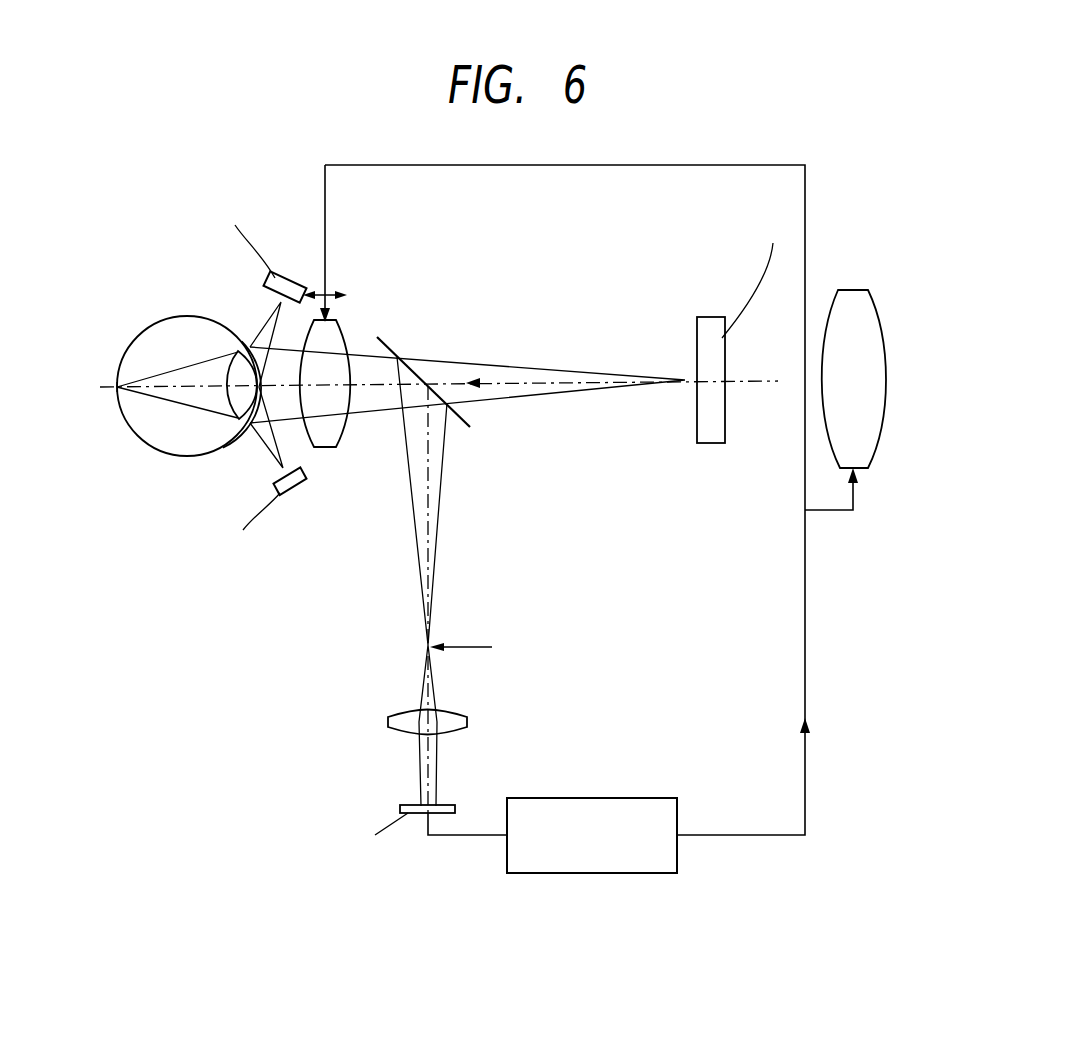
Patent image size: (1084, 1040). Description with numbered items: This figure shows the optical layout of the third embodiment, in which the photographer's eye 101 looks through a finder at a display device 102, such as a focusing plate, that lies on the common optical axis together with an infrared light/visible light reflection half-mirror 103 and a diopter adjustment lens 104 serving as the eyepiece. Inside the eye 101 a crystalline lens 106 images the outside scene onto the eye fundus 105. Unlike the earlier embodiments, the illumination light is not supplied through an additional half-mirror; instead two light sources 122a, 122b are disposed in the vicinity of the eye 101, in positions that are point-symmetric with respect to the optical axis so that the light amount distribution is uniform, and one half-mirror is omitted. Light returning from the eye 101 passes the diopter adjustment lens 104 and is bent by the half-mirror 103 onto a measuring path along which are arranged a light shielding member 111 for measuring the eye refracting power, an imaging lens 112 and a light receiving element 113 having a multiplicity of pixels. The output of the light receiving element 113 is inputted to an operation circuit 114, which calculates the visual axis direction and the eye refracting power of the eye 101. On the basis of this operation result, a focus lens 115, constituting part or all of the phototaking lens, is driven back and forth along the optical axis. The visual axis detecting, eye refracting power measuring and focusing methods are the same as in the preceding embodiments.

The eye 101 is at (193, 327).
The display device 102 is at (705, 330).
The infrared light/visible light reflection half-mirror 103 is at (385, 341).
The diopter adjustment lens 104 is at (347, 338).
The eye fundus 105 is at (117, 390).
The crystalline lens 106 is at (222, 425).
The light shielding member 111 is at (463, 647).
The imaging lens 112 is at (448, 722).
The light receiving element 113 is at (450, 805).
The operation circuit 114 is at (597, 798).
The focus lens 115 is at (870, 428).
The light source 122a is at (288, 284).
The light source 122b is at (293, 490).